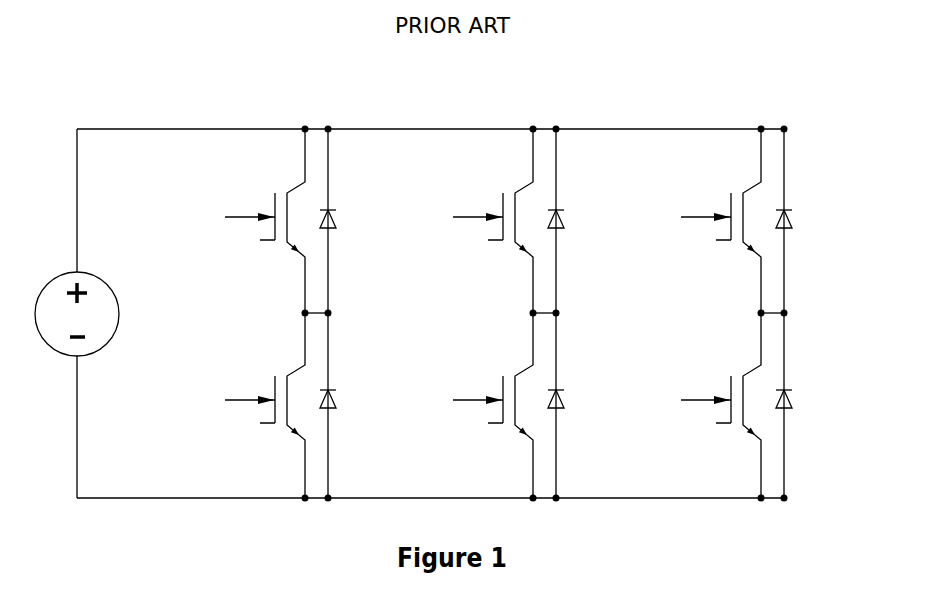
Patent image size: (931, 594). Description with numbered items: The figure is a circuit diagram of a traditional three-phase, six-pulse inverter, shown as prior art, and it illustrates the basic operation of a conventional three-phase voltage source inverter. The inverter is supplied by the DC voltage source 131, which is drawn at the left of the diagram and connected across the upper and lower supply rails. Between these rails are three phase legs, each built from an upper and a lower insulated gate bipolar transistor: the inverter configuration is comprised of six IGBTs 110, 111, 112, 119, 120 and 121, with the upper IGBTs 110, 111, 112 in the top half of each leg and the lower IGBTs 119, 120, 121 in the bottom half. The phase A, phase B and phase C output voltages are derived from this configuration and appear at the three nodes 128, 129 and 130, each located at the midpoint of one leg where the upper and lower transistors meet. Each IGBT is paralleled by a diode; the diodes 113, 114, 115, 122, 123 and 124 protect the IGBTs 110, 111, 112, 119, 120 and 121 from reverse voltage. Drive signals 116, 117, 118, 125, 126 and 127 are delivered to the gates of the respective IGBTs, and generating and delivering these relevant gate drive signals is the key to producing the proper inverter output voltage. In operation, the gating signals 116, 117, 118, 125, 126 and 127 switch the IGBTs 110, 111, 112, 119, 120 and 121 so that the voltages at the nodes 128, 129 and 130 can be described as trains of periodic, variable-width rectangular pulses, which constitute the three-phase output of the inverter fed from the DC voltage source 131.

The insulated gate bipolar transistor 110 is at (298, 186).
The insulated gate bipolar transistor 111 is at (526, 186).
The insulated gate bipolar transistor 112 is at (754, 186).
The diode 113 is at (336, 213).
The diode 114 is at (564, 213).
The diode 115 is at (792, 213).
The drive signal 116 is at (247, 217).
The drive signal 117 is at (475, 217).
The drive signal 118 is at (703, 217).
The insulated gate bipolar transistor 119 is at (298, 369).
The insulated gate bipolar transistor 120 is at (526, 369).
The insulated gate bipolar transistor 121 is at (754, 369).
The diode 122 is at (337, 394).
The diode 123 is at (565, 394).
The diode 124 is at (793, 394).
The drive signal 125 is at (247, 400).
The drive signal 126 is at (475, 400).
The drive signal 127 is at (703, 400).
The node 128 is at (331, 310).
The node 129 is at (559, 310).
The node 130 is at (787, 310).
The DC voltage source 131 is at (104, 282).